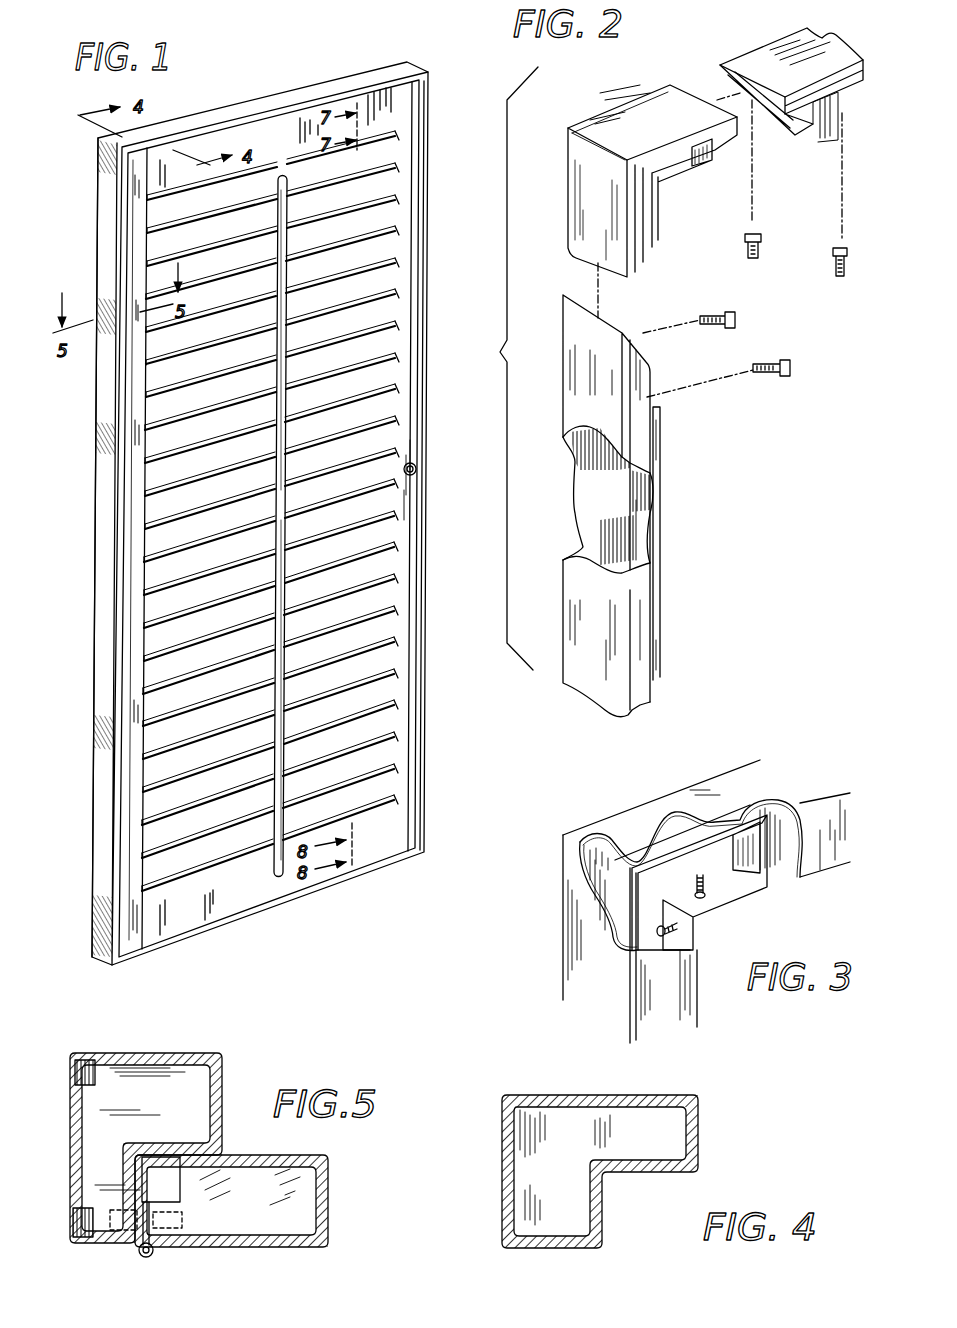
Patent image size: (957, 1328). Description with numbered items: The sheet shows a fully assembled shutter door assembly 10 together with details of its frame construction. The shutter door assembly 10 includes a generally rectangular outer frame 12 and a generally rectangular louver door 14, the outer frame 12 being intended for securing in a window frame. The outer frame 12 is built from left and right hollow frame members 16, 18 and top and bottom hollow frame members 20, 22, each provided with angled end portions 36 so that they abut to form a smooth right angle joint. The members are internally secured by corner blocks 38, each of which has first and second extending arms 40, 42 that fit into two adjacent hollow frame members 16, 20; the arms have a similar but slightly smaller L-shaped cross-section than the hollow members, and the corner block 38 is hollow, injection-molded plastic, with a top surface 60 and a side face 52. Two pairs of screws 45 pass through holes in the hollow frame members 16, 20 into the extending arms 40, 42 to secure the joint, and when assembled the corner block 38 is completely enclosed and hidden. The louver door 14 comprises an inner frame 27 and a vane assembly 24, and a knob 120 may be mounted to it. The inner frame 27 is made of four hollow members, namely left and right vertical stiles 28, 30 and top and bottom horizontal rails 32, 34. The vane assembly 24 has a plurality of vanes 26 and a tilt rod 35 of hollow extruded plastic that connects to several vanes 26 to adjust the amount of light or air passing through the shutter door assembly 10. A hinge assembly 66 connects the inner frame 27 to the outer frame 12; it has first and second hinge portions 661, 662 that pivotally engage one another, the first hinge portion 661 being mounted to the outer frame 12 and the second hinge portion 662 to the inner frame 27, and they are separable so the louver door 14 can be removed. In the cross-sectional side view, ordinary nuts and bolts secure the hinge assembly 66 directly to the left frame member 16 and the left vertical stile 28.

In FIG. 1, the shutter door assembly 10 is at (270, 80).
In FIG. 1, the outer frame 12 is at (104, 462).
In FIG. 1, the louver door 14 is at (402, 617).
In FIG. 1, the left hollow frame member 16 is at (101, 565).
In FIG. 2, the left hollow frame member 16 is at (640, 403).
In FIG. 3, the left hollow frame member 16 is at (590, 970).
In FIG. 5, the left hollow frame member 16 is at (250, 1080).
In FIG. 1, the right hollow frame member 18 is at (424, 502).
In FIG. 1, the top hollow frame member 20 is at (191, 122).
In FIG. 2, the top hollow frame member 20 is at (810, 130).
In FIG. 3, the top hollow frame member 20 is at (817, 860).
In FIG. 4, the top hollow frame member 20 is at (615, 1095).
In FIG. 1, the bottom hollow frame member 22 is at (248, 912).
In FIG. 1, the vane assembly 24 is at (370, 288).
In FIG. 1, the vanes 26 is at (390, 218).
In FIG. 1, the inner frame 27 is at (420, 664).
In FIG. 1, the left vertical stile 28 is at (127, 823).
In FIG. 5, the left vertical stile 28 is at (345, 1162).
In FIG. 1, the right vertical stile 30 is at (403, 560).
In FIG. 1, the top horizontal rail 32 is at (372, 112).
In FIG. 1, the bottom horizontal rail 34 is at (175, 913).
In FIG. 1, the tilt rod 35 is at (288, 376).
In FIG. 2, the angled end portions 36 is at (770, 140).
In FIG. 2, the corner block 38 is at (660, 82).
In FIG. 3, the corner block 38 is at (691, 875).
In FIG. 5, the corner block 38 is at (92, 1123).
In FIG. 2, the first extending arm 40 is at (665, 229).
In FIG. 2, the second extending arm 42 is at (688, 176).
In FIG. 4, the second extending arm 42 is at (700, 1126).
In FIG. 2, the screws 45 is at (834, 257).
In FIG. 3, the screws 45 is at (658, 925).
In FIG. 2, the corner piece face 52 is at (595, 235).
In FIG. 2, the corner piece top 60 is at (684, 106).
In FIG. 1, the hinge assembly 66 is at (125, 303).
In FIG. 5, the hinge assembly 66 is at (142, 1267).
In FIG. 5, the first hinge portion 661 is at (107, 1240).
In FIG. 5, the second hinge portion 662 is at (168, 1243).
In FIG. 1, the knob 120 is at (417, 467).